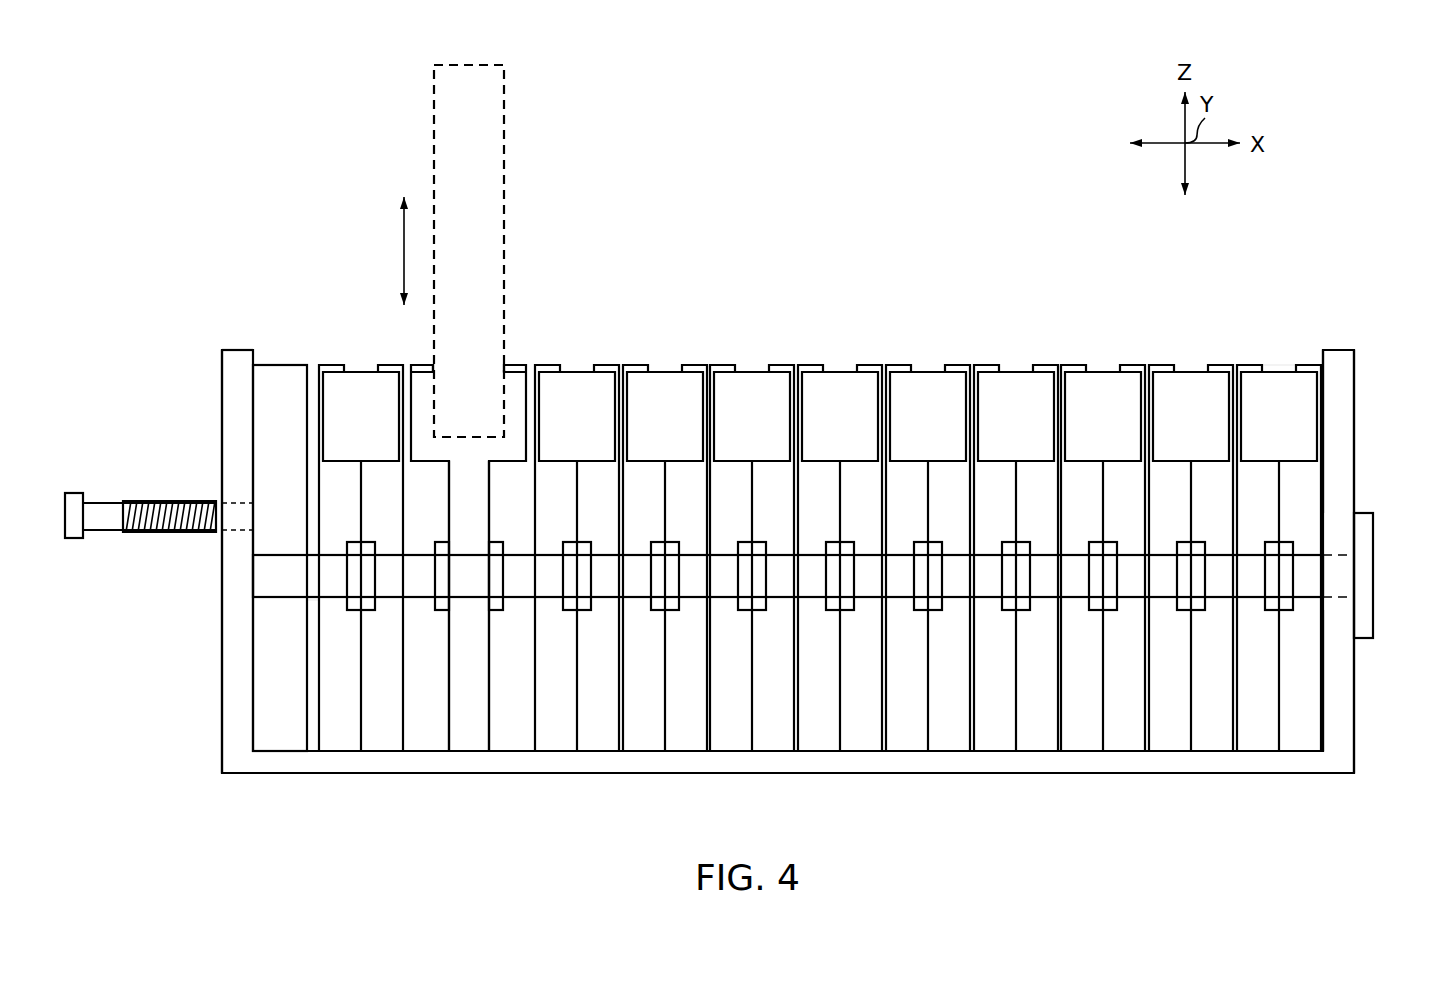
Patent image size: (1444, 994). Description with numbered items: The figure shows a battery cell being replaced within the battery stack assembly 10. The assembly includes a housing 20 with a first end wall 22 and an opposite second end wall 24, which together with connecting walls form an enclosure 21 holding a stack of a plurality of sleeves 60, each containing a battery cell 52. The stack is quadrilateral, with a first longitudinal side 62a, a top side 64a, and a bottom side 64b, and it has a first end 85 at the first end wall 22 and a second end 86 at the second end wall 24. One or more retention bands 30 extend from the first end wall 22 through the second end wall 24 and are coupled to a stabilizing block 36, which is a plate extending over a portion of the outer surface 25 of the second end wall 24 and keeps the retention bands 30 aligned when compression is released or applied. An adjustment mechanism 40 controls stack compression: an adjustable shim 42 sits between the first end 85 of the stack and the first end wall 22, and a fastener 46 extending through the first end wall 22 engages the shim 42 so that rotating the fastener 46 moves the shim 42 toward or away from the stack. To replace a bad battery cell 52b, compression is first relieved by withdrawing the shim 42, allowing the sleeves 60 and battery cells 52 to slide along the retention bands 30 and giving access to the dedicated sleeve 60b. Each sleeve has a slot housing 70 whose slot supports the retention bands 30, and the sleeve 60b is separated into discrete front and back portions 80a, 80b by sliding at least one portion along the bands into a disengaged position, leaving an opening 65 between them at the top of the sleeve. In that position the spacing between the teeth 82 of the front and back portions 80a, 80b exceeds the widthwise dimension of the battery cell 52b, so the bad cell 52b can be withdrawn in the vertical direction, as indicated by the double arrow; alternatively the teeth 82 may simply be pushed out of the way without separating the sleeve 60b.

The battery stack assembly 10 is at (232, 158).
The housing 20 is at (760, 509).
The enclosure 21 is at (250, 313).
The first end wall 22 is at (222, 415).
The second end wall 24 is at (1355, 415).
The outer surface 25 is at (1355, 492).
The retention band 30 is at (292, 598).
The stabilizing block 36 is at (1373, 574).
The adjustment mechanism 40 is at (163, 568).
The adjustable shim 42 is at (291, 365).
The fastener 46 is at (76, 493).
The battery cell 52 is at (820, 369).
The bad battery cell 52b is at (433, 116).
The sleeve 60 is at (820, 611).
The sleeve 60b is at (803, 823).
The first longitudinal side 62a is at (1324, 783).
The top side 64a is at (1290, 281).
The bottom side 64b is at (1236, 833).
The slot 65 is at (485, 506).
The slot housing 70 is at (857, 649).
The front portion 80a is at (437, 742).
The back portion 80b is at (511, 742).
The teeth 82 is at (418, 365).
The first end 85 is at (273, 704).
The second end 86 is at (1379, 680).